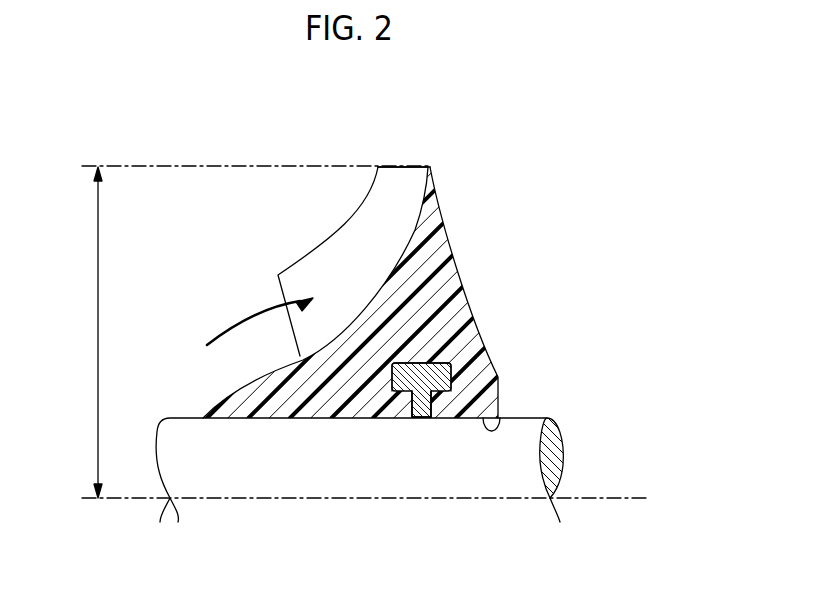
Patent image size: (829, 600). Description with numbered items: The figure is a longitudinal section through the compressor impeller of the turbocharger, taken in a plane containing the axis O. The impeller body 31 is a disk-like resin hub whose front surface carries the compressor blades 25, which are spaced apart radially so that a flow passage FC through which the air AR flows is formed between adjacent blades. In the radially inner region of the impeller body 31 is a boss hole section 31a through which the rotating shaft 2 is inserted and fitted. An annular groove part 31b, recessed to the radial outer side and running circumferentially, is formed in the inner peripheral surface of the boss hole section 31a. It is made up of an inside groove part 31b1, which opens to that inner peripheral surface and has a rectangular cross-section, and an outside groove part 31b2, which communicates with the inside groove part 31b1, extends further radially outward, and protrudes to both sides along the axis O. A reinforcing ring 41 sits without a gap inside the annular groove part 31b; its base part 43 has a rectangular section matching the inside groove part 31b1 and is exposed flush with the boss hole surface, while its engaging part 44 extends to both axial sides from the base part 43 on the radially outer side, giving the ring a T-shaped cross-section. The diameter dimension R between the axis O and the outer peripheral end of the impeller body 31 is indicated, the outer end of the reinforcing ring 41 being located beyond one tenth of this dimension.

The rotating shaft 2 is at (528, 445).
The compressor blade 25 is at (362, 212).
The impeller body 31 is at (450, 283).
The boss hole section 31a is at (500, 428).
The annular groove part 31b is at (526, 360).
The inside groove part 31b1 is at (428, 410).
The outside groove part 31b2 is at (443, 368).
The reinforcing ring 41 is at (429, 475).
The base part 43 is at (430, 396).
The engaging part 44 is at (393, 393).
The air AR is at (227, 337).
The flow passage FC is at (362, 288).
The diameter dimension R is at (361, 332).
The axis O is at (605, 498).